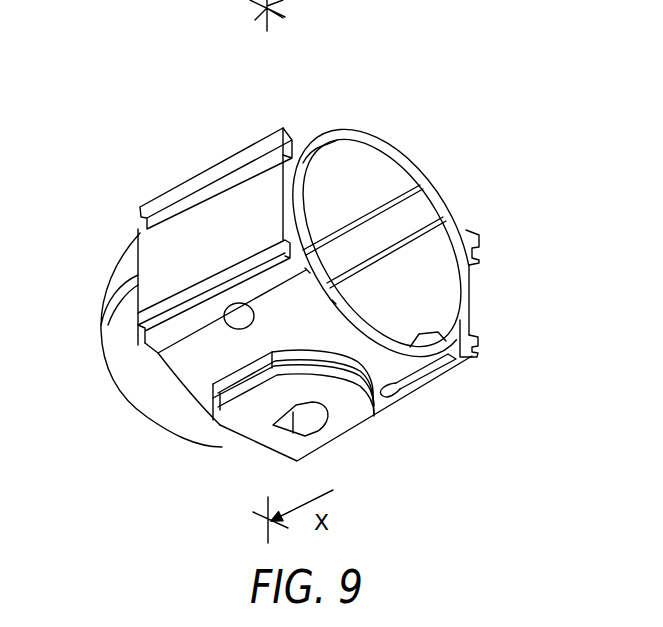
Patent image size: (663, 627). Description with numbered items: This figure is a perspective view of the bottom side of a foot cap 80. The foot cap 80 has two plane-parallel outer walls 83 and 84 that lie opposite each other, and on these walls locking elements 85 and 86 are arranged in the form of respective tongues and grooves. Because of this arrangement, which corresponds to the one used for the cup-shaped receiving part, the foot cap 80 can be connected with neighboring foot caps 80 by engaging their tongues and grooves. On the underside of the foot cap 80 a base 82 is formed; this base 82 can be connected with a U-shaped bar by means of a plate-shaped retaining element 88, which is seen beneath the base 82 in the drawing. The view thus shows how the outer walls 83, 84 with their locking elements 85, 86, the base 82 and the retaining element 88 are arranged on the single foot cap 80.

The foot cap 80 is at (428, 141).
The base 82 is at (221, 425).
The outer wall 83 is at (198, 236).
The outer wall 84 is at (469, 295).
The locking element 85 is at (253, 172).
The locking element 86 is at (478, 251).
The plate-shaped retaining element 88 is at (349, 419).